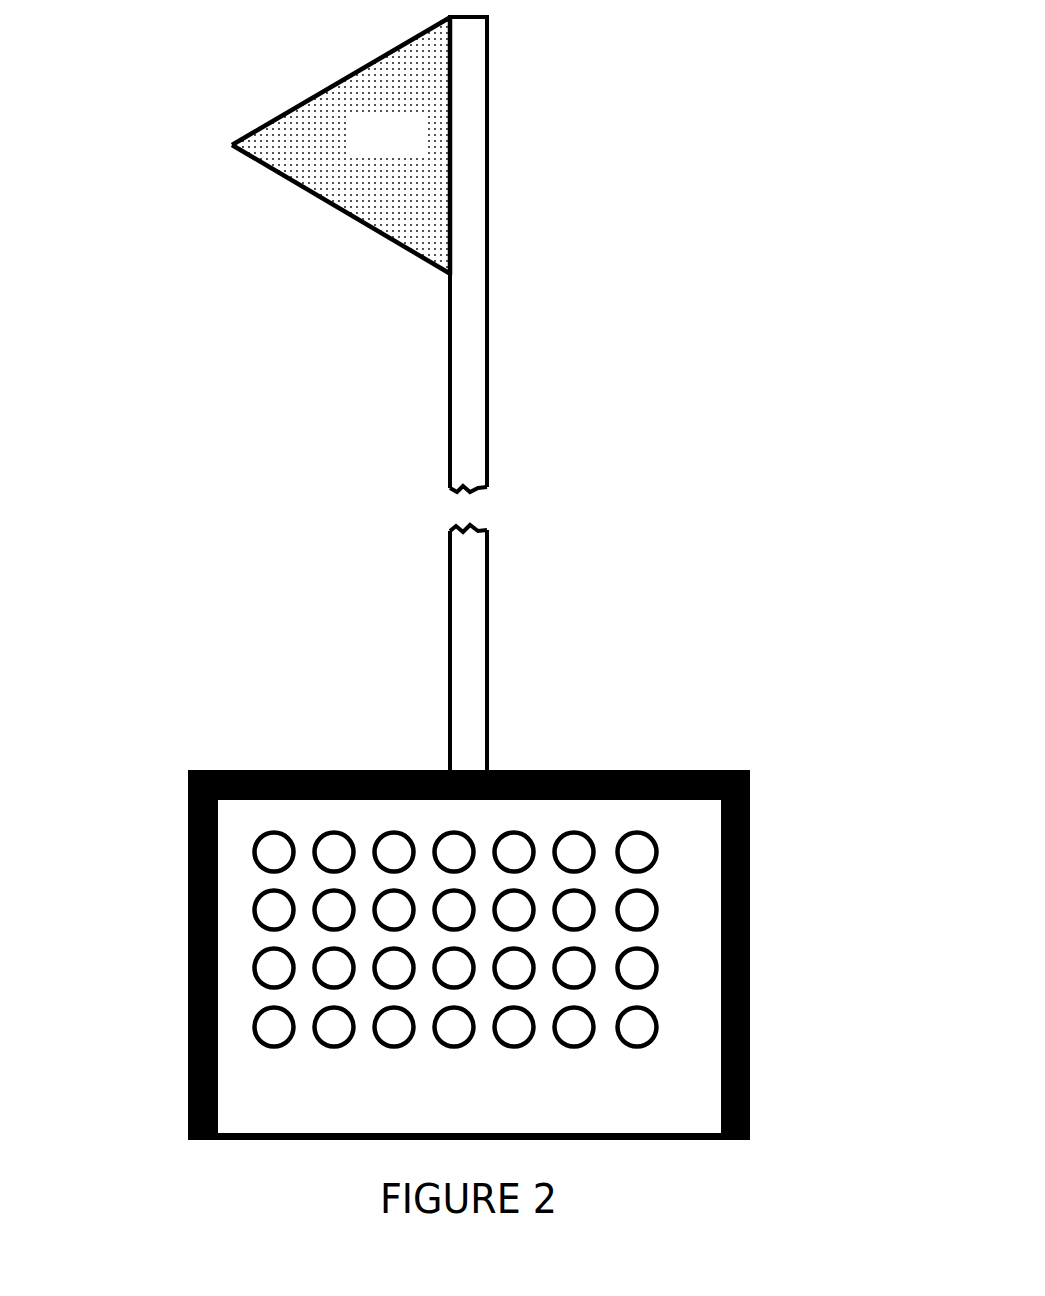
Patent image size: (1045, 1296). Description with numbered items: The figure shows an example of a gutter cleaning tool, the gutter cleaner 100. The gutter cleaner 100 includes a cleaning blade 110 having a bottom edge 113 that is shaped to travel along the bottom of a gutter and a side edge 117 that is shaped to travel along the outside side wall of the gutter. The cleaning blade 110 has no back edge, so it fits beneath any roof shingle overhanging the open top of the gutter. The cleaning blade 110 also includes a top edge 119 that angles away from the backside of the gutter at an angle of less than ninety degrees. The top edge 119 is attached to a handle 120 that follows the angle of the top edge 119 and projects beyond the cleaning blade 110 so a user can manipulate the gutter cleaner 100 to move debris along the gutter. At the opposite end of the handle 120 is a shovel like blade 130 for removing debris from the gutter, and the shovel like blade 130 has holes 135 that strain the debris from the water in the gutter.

The gutter cleaner 100 is at (489, 577).
The cleaning blade 110 is at (413, 150).
The bottom edge 113 is at (343, 80).
The side edge 117 is at (343, 213).
The top edge 119 is at (453, 147).
The handle 120 is at (469, 395).
The shovel like blade 130 is at (256, 1075).
The holes 135 is at (460, 869).